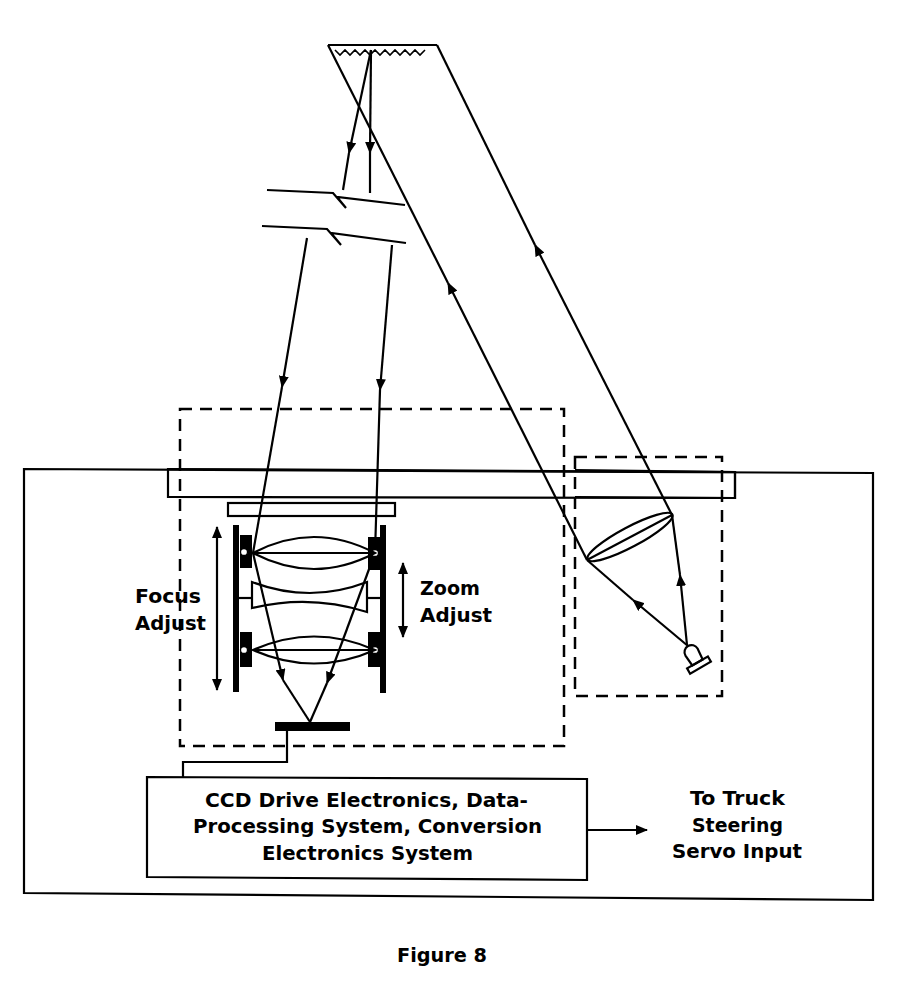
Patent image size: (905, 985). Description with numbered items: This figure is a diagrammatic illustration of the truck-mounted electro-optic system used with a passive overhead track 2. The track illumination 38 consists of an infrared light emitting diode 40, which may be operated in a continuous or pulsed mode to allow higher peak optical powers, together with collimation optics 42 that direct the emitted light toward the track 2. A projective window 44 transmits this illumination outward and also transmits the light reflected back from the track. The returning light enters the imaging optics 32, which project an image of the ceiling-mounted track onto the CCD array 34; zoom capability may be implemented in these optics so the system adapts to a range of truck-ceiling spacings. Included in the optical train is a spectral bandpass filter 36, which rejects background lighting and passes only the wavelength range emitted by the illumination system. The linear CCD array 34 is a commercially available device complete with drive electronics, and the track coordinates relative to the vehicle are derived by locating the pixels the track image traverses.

The overhead track 2 is at (430, 62).
The imaging optics 32 is at (203, 408).
The CCD array 34 is at (352, 725).
The spectral bandpass filter 36 is at (300, 487).
The track illumination 38 is at (683, 692).
The light emitting diode 40 is at (705, 655).
The collimation optics 42 is at (665, 538).
The projective window 44 is at (688, 485).